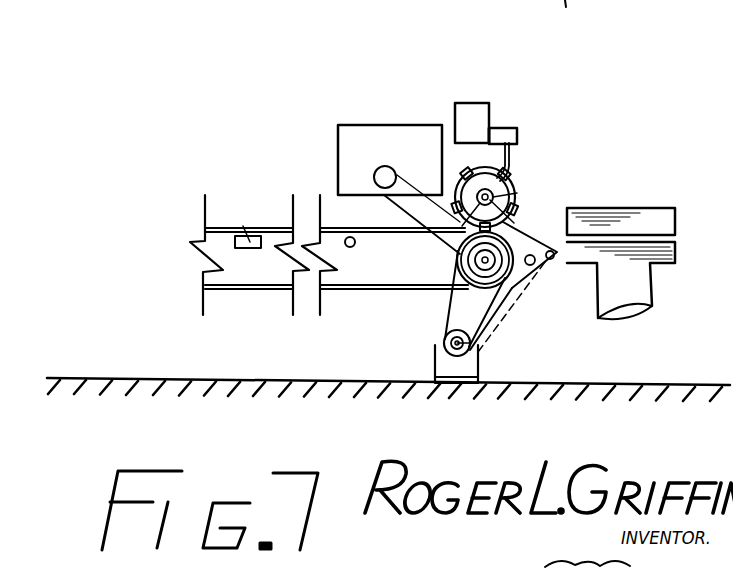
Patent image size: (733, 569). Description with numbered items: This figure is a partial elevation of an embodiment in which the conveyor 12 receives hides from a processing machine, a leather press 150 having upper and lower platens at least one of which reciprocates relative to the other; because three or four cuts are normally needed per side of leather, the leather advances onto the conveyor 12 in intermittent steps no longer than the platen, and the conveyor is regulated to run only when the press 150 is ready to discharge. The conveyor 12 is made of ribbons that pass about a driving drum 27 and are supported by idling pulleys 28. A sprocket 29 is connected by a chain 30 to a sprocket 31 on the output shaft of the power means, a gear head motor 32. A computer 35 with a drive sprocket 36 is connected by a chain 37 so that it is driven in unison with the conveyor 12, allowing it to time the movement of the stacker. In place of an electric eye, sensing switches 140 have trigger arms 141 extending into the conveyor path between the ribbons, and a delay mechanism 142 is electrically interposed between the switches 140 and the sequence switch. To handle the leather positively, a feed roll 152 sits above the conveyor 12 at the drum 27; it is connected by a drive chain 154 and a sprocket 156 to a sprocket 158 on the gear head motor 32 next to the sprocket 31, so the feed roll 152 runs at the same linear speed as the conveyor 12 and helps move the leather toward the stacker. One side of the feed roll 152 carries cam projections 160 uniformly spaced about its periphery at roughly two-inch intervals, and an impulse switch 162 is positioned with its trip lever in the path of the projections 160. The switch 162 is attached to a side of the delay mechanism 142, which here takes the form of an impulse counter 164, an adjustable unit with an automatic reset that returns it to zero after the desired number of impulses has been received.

The conveyor 12 is at (282, 204).
The trigger arms 141 is at (250, 203).
The sensing switches 140 is at (248, 248).
The idling pulleys 28 is at (350, 247).
The computer 35 is at (347, 124).
The drive sprocket 36 is at (392, 167).
The chain 37 is at (402, 210).
The feed roll 152 is at (515, 178).
The sprocket 156 is at (517, 193).
The cam projections 160 is at (522, 156).
The delay mechanism 142 is at (464, 102).
The impulse counter 164 is at (485, 100).
The impulse switch 162 is at (496, 126).
The driving drum 27 is at (462, 266).
The sprocket 29 is at (522, 278).
The drive chain 154 is at (503, 312).
The chain 30 is at (450, 304).
The sprocket 31 is at (444, 340).
The gear head motor 32 is at (434, 357).
The sprocket 158 is at (472, 350).
The leather press 150 is at (657, 264).